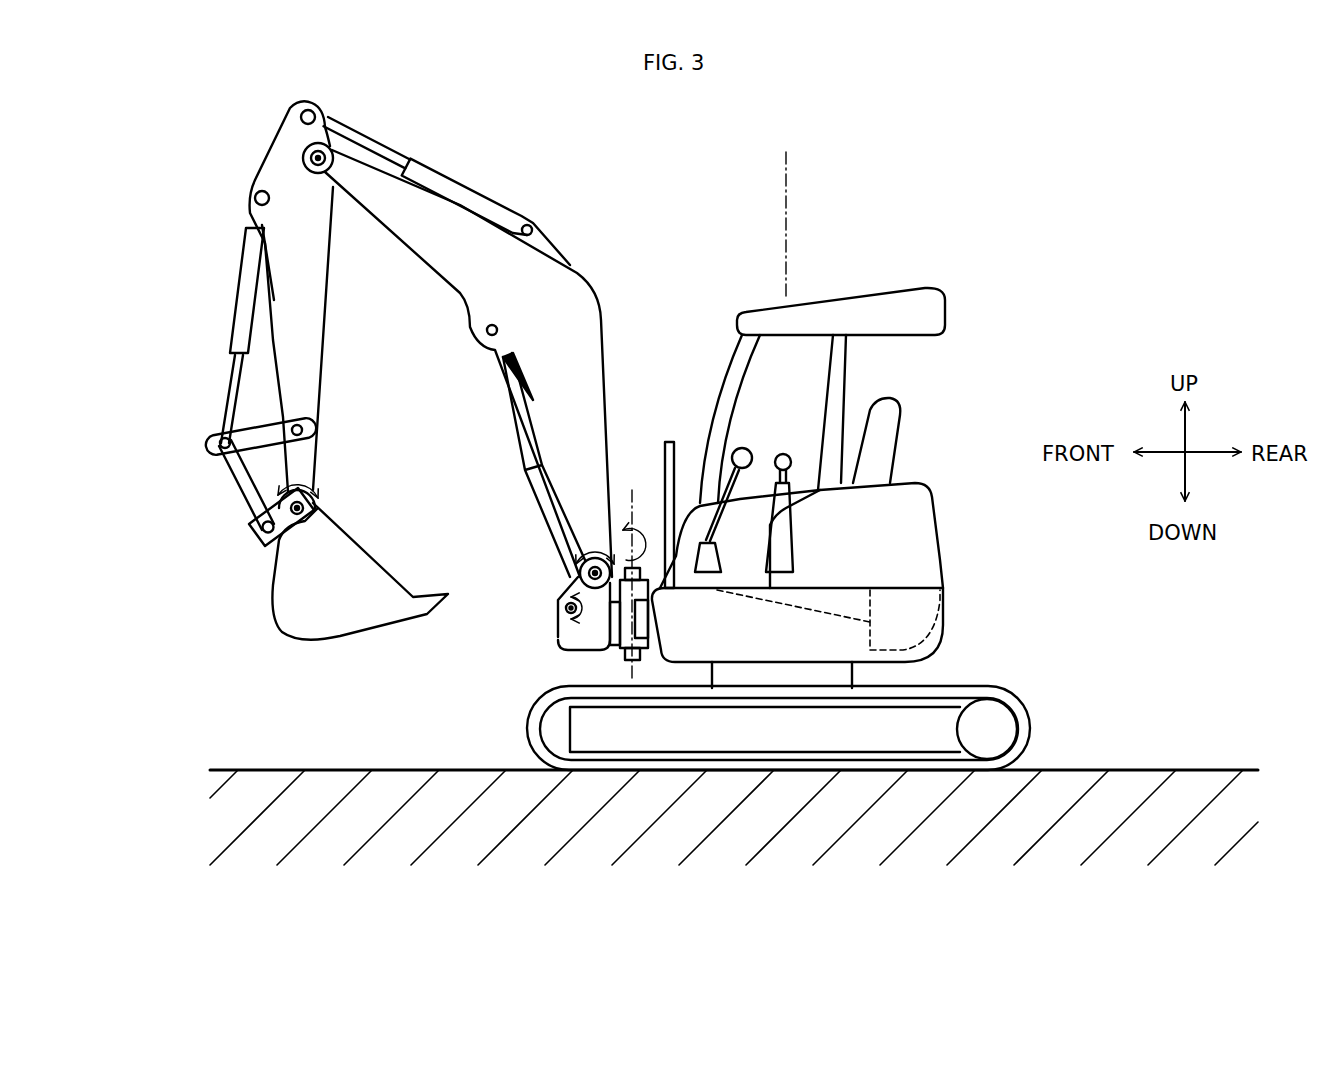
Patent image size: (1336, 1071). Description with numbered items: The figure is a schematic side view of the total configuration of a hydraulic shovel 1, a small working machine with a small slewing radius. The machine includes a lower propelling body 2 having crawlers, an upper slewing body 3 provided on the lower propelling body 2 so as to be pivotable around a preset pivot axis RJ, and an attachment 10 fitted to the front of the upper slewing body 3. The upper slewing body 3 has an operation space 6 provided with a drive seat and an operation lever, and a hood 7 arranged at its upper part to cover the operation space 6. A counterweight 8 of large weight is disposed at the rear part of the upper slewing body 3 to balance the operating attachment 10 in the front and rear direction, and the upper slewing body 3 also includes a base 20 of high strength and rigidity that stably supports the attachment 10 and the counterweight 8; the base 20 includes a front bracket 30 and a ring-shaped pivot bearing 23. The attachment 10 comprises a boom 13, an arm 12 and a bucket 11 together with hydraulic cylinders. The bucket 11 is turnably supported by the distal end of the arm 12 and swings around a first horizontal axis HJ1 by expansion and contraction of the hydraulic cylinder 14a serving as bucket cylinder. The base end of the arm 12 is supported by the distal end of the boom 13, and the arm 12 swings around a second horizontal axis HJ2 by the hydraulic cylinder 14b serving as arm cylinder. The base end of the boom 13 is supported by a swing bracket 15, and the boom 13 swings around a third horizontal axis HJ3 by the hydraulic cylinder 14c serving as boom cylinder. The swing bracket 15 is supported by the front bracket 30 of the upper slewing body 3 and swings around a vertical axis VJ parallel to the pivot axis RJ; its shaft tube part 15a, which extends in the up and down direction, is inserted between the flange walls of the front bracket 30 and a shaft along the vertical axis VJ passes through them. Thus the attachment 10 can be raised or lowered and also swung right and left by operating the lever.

The hydraulic shovel 1 is at (948, 206).
The lower propelling body 2 is at (1028, 718).
The upper slewing body 3 is at (928, 522).
The operation space 6 is at (865, 388).
The hood 7 is at (937, 310).
The counterweight 8 is at (905, 618).
The attachment 10 is at (553, 180).
The bucket 11 is at (344, 614).
The arm 12 is at (318, 293).
The boom 13 is at (580, 300).
The hydraulic cylinder (bucket cylinder) 14a is at (248, 288).
The hydraulic cylinder (arm cylinder) 14b is at (468, 192).
The hydraulic cylinder (boom cylinder) 14c is at (532, 480).
The swing bracket 15 is at (575, 642).
The shaft tube part 15a is at (617, 623).
The base 20 is at (797, 628).
The pivot bearing 23 is at (846, 683).
The front bracket 30 is at (653, 645).
The first horizontal axis HJ1 is at (322, 505).
The second horizontal axis HJ2 is at (335, 155).
The third horizontal axis HJ3 is at (588, 558).
The vertical axis VJ is at (636, 520).
The pivot axis RJ is at (790, 192).